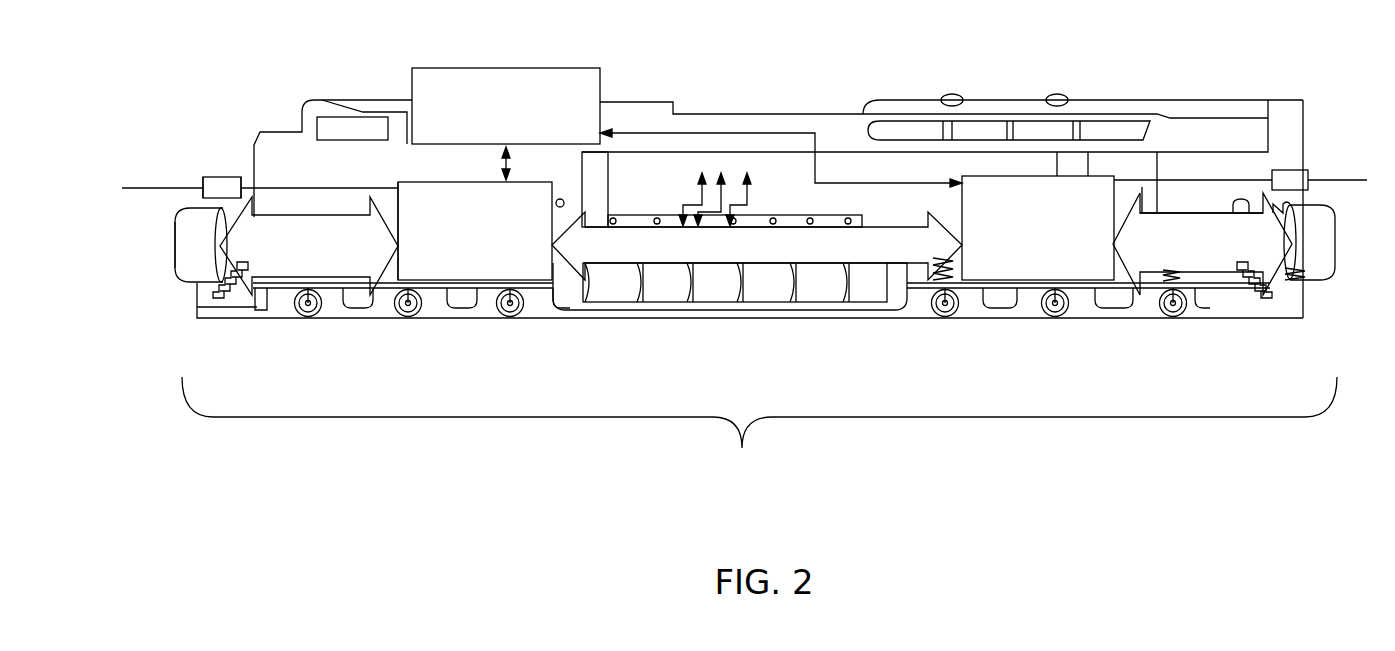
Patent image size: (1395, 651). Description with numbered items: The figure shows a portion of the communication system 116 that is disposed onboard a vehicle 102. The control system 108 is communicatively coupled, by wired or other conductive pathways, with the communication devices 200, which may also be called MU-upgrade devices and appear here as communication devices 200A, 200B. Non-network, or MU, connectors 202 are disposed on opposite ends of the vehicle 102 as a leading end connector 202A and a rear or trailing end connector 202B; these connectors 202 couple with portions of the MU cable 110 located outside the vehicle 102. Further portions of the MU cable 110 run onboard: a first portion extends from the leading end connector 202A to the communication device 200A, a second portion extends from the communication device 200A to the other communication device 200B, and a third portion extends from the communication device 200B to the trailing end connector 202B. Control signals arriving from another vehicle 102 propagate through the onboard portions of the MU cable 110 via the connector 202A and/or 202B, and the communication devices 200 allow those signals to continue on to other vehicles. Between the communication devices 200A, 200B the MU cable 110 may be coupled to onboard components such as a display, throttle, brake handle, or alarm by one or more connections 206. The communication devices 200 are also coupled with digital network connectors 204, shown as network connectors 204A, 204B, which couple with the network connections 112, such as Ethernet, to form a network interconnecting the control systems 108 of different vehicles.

The vehicle 102 is at (1285, 100).
The control system 108 is at (536, 67).
The MU cable 110 is at (238, 293).
The network connections 112 is at (138, 185).
The communication system 116 is at (742, 450).
The communication devices 200 is at (436, 262).
The communication device 200A is at (535, 267).
The communication device 200B is at (1080, 267).
The connectors 202 is at (165, 253).
The leading end connector 202A is at (188, 227).
The trailing end connector 202B is at (1313, 283).
The digital network connectors 204 is at (192, 170).
The network connector 204A is at (212, 177).
The network connector 204B is at (1308, 168).
The connections 206 is at (748, 200).